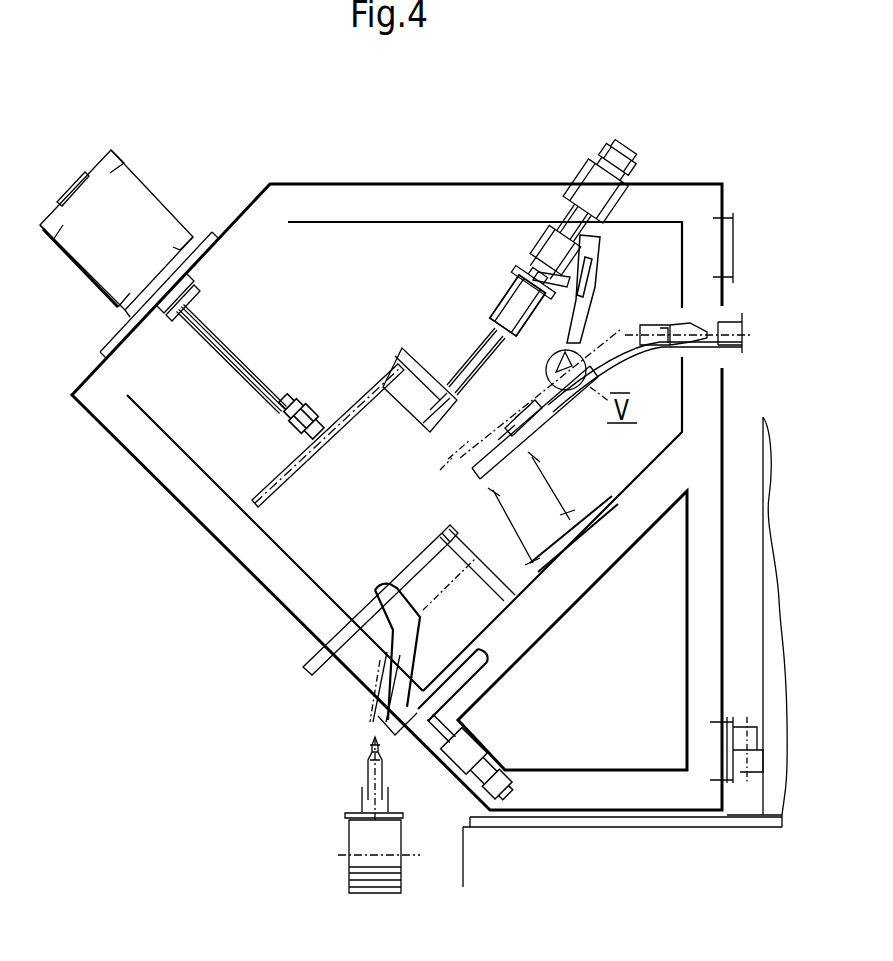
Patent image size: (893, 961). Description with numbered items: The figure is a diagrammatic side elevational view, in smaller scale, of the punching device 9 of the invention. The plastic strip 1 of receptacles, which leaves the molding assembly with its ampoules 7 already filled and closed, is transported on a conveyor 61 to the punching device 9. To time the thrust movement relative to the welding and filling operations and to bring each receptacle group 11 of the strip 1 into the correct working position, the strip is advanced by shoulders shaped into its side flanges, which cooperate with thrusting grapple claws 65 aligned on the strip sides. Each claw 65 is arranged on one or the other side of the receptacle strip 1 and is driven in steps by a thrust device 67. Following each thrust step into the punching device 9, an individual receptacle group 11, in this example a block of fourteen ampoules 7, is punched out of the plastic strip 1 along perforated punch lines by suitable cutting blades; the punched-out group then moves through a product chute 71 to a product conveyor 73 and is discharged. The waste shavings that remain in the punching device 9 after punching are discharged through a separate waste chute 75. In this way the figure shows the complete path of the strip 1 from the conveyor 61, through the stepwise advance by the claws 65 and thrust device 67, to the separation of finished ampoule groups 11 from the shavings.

The thrust device 67 is at (527, 172).
The thrusting grapple claw 65 is at (572, 317).
The conveyor 61 is at (722, 347).
The ampoule 7 is at (650, 323).
The plastic strip 1 is at (665, 330).
The punching device 9 is at (360, 385).
The waste chute 75 is at (335, 627).
The product chute 71 is at (411, 655).
The receptacle group 11 is at (366, 777).
The product conveyor 73 is at (370, 830).